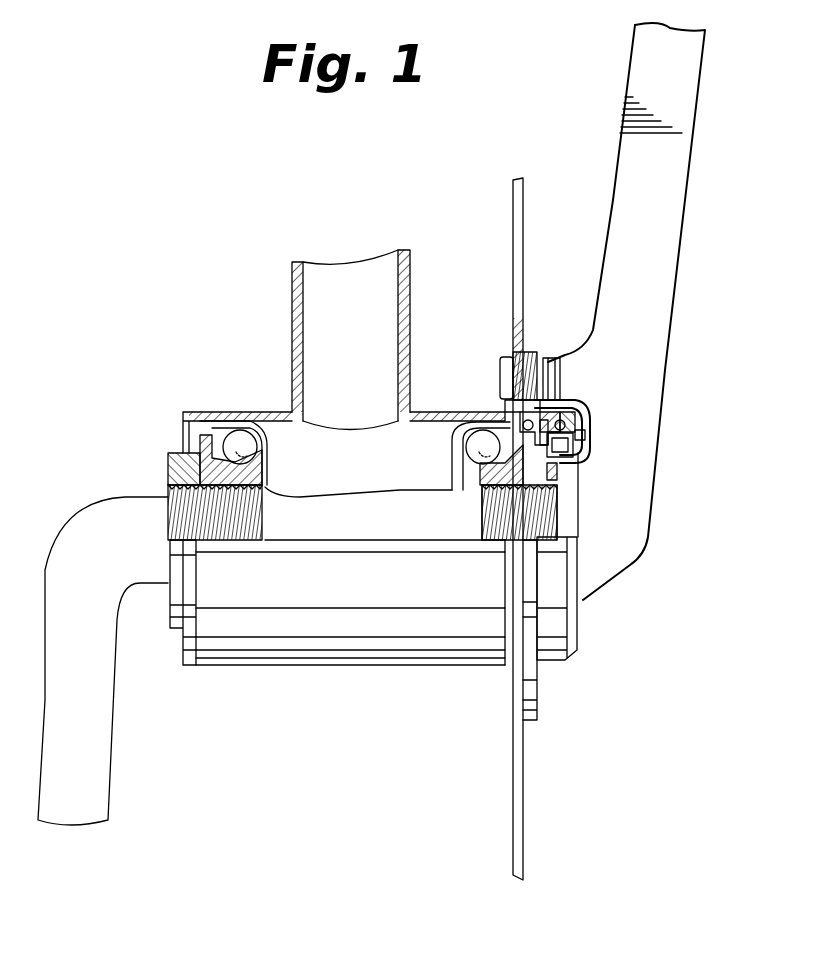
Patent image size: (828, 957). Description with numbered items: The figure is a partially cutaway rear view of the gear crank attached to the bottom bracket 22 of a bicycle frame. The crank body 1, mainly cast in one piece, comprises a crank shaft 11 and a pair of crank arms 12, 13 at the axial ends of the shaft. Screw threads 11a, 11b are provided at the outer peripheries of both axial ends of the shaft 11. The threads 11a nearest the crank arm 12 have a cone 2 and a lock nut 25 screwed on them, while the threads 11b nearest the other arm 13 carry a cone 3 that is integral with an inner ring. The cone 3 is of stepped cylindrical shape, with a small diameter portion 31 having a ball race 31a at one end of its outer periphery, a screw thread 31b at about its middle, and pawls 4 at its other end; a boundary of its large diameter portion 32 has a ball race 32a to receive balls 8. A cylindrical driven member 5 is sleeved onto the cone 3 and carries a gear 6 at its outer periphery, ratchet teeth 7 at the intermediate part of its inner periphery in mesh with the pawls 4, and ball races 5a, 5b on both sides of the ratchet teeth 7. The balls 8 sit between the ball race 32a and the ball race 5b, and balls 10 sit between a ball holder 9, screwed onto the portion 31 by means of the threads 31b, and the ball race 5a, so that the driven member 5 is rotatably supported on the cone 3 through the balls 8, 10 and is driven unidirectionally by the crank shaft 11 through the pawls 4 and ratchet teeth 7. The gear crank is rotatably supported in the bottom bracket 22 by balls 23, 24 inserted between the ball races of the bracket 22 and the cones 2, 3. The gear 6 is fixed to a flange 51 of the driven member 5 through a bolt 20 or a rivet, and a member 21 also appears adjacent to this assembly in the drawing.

The crank body 1 is at (663, 423).
The cone 2 is at (205, 440).
The cone 3 is at (558, 470).
The pawls 4 is at (577, 453).
The driven member 5 is at (575, 410).
The ball race 5a is at (540, 420).
The ball race 5b is at (575, 425).
The gear 6 is at (517, 233).
The ratchet teeth 7 is at (560, 420).
The balls 8 is at (585, 432).
The ball holder 9 is at (465, 425).
The balls 10 is at (507, 415).
The crank shaft 11 is at (400, 515).
The screw threads 11a is at (222, 540).
The screw threads 11b is at (510, 540).
The crank arm 12 is at (120, 510).
The crank arm 13 is at (668, 257).
The bolt 20 is at (507, 358).
The lock nut 21 is at (551, 358).
The bottom bracket 22 is at (263, 410).
The balls 23 is at (240, 440).
The balls 24 is at (430, 410).
The lock nut 25 is at (172, 455).
The small diameter portion 31 is at (557, 507).
The ball race 31a is at (475, 505).
The screw thread 31b is at (540, 537).
The large diameter portion 32 is at (587, 433).
The ball race 32a is at (567, 420).
The flange 51 is at (527, 352).